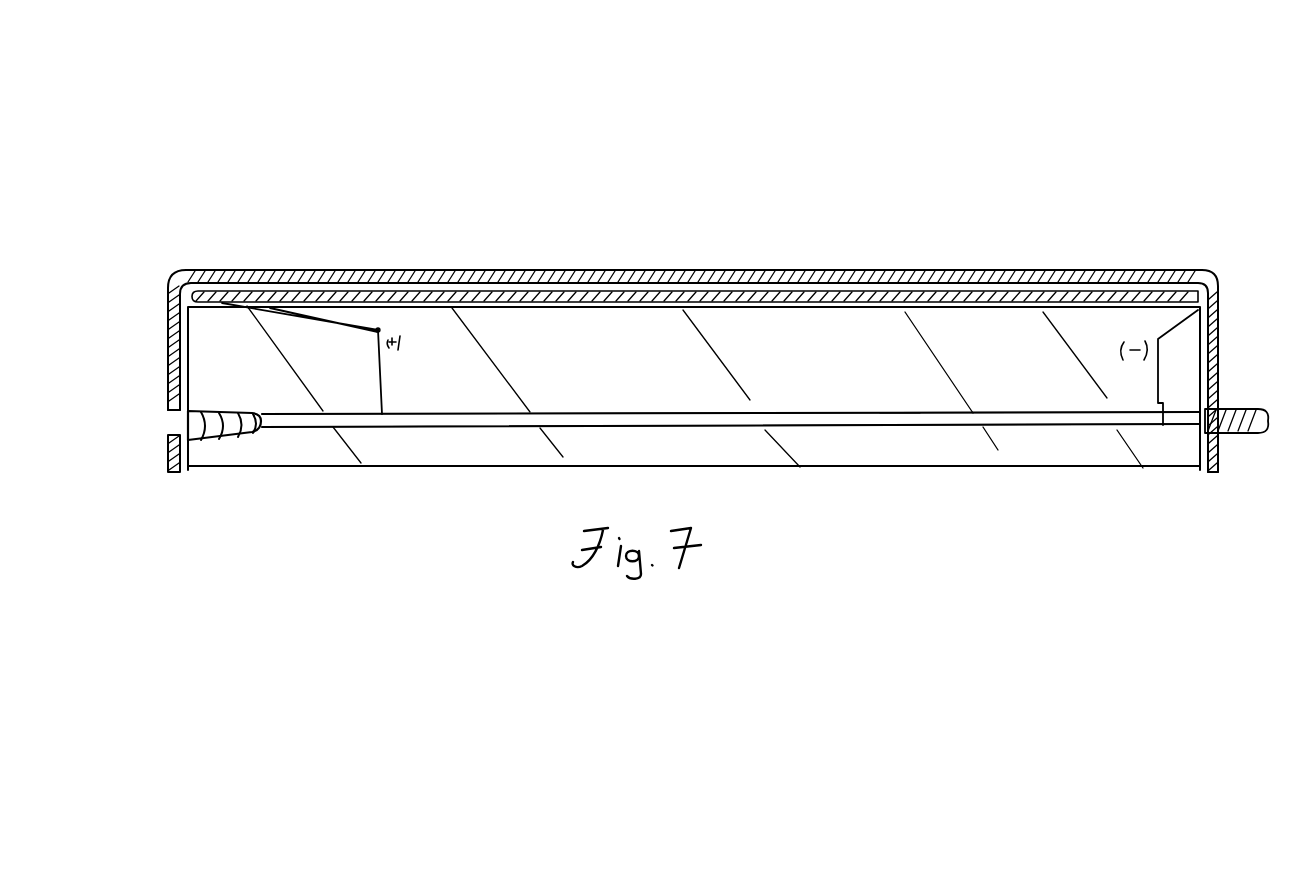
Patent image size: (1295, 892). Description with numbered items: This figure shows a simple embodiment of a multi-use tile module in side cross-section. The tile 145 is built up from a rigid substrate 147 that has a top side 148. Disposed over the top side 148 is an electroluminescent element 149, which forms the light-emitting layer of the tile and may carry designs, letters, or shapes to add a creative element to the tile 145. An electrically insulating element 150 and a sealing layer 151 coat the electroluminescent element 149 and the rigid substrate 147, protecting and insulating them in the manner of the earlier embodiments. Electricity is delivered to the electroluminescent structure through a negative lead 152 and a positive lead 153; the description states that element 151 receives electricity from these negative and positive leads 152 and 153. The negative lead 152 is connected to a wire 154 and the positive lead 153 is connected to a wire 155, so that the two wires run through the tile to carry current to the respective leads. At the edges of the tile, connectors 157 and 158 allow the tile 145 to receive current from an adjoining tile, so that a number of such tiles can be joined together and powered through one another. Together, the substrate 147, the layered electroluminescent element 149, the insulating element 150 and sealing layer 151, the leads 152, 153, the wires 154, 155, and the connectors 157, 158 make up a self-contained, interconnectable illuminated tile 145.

The tile 145 is at (349, 168).
The rigid substrate 147 is at (363, 390).
The top side 148 is at (170, 298).
The electroluminescent element 149 is at (797, 297).
The electrically insulating element 150 is at (1032, 293).
The sealing layer 151 is at (627, 270).
The negative lead 152 is at (1158, 356).
The positive lead 153 is at (447, 365).
The wire 154 is at (892, 427).
The wire 155 is at (890, 413).
The connector 157 is at (1247, 435).
The connector 158 is at (193, 425).